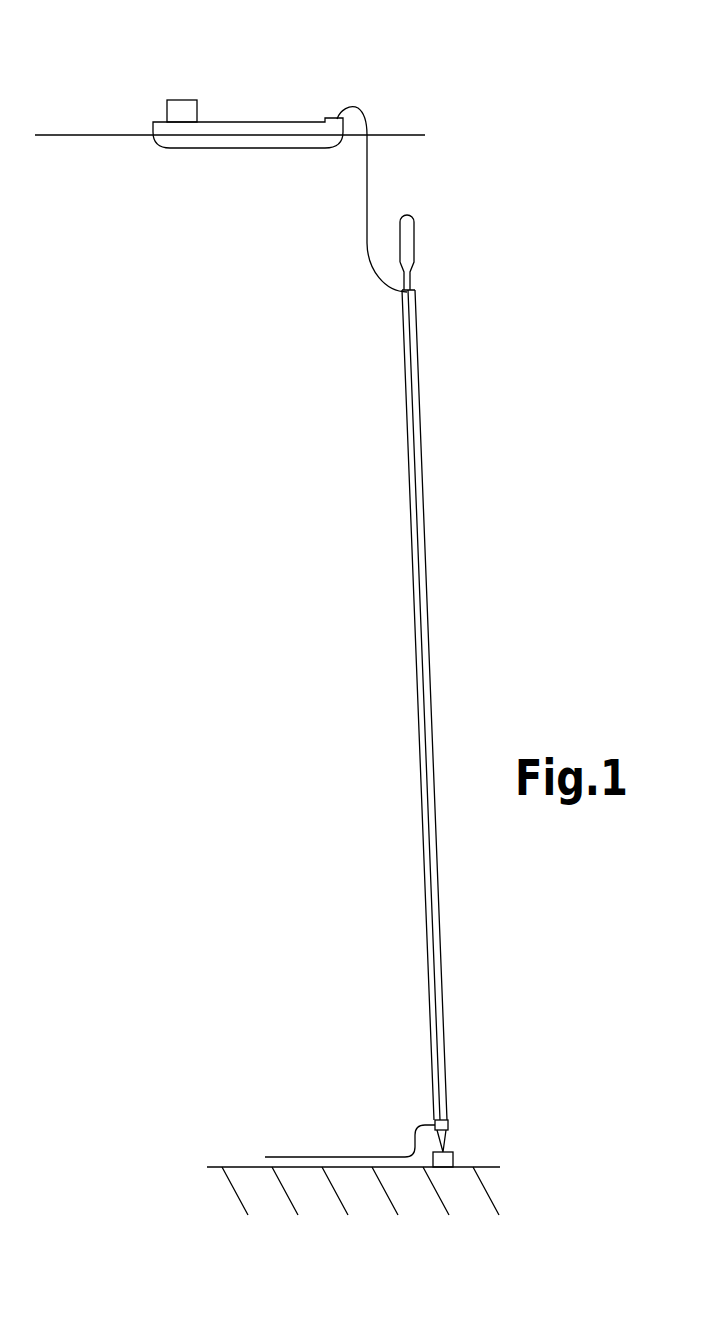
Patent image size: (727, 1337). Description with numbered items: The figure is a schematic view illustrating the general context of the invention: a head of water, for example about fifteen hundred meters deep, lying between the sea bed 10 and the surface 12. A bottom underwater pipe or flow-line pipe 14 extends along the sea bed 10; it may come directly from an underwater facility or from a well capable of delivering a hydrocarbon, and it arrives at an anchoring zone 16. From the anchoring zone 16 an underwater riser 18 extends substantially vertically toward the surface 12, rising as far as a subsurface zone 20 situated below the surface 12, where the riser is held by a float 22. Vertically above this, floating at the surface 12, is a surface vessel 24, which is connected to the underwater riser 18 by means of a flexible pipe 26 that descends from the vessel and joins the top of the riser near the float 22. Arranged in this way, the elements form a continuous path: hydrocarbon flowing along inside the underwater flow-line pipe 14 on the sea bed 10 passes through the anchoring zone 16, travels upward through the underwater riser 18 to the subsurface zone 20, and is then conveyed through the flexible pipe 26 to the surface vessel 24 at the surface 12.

The sea bed 10 is at (242, 1167).
The surface 12 is at (103, 134).
The flow-line pipe 14 is at (352, 1157).
The anchoring zone 16 is at (449, 1152).
The underwater riser 18 is at (415, 528).
The subsurface zone 20 is at (517, 315).
The float 22 is at (410, 240).
The surface vessel 24 is at (226, 121).
The flexible pipe 26 is at (365, 215).